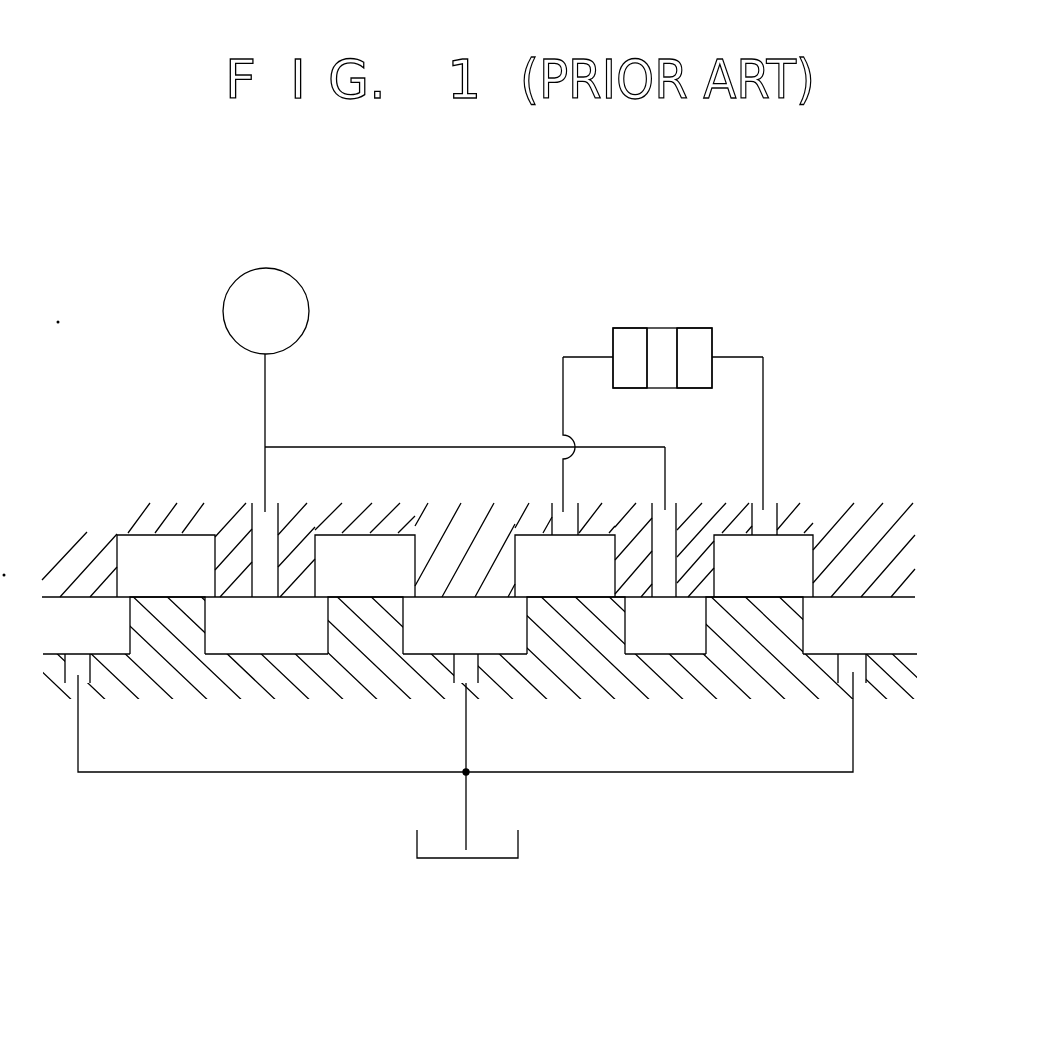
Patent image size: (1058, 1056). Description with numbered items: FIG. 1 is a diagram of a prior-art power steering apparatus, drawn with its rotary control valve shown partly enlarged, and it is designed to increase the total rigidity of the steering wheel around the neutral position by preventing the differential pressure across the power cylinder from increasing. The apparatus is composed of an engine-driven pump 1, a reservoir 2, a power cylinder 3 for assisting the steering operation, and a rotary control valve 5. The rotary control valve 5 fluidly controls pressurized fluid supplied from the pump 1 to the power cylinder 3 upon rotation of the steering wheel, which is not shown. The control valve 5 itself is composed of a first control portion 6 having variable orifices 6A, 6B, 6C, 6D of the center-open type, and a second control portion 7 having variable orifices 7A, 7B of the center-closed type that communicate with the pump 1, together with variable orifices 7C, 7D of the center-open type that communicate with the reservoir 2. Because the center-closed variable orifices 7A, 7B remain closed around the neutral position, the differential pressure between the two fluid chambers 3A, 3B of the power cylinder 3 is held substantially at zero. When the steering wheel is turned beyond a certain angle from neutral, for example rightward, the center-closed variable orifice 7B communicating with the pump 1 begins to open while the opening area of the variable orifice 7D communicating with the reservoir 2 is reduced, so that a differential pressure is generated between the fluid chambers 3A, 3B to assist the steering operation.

The engine-driven pump 1 is at (282, 285).
The reservoir 2 is at (484, 860).
The power cylinder 3 is at (663, 304).
The fluid chamber 3A is at (625, 328).
The fluid chamber 3B is at (698, 328).
The rotary control valve 5 is at (862, 560).
The first control portion 6 is at (235, 526).
The variable orifice 6A is at (213, 605).
The variable orifice 6B is at (317, 605).
The variable orifice 6C is at (134, 583).
The variable orifice 6D is at (402, 585).
The second control portion 7 is at (700, 528).
The variable orifice 7A is at (633, 606).
The variable orifice 7B is at (697, 606).
The variable orifice 7C is at (530, 585).
The variable orifice 7D is at (797, 582).